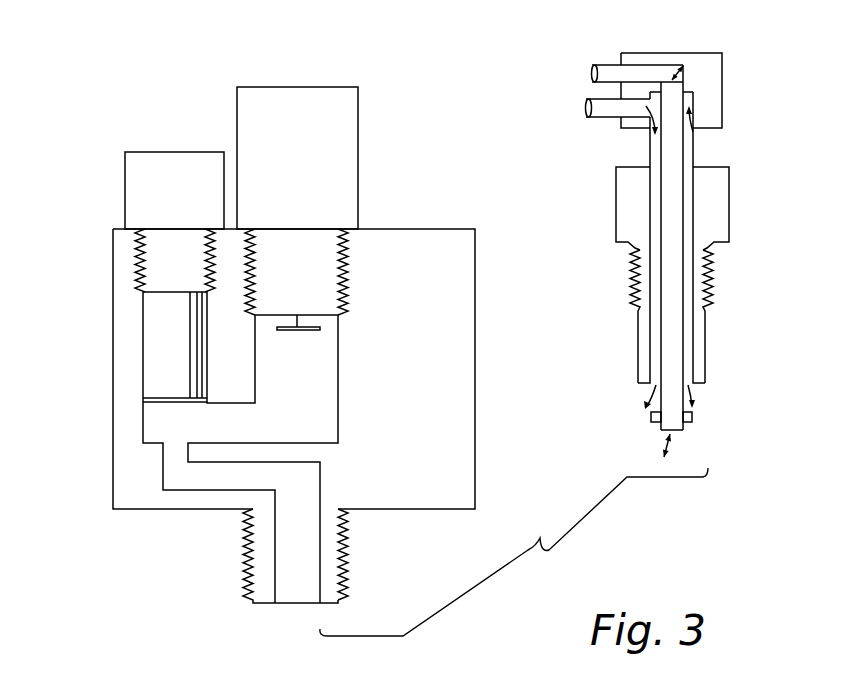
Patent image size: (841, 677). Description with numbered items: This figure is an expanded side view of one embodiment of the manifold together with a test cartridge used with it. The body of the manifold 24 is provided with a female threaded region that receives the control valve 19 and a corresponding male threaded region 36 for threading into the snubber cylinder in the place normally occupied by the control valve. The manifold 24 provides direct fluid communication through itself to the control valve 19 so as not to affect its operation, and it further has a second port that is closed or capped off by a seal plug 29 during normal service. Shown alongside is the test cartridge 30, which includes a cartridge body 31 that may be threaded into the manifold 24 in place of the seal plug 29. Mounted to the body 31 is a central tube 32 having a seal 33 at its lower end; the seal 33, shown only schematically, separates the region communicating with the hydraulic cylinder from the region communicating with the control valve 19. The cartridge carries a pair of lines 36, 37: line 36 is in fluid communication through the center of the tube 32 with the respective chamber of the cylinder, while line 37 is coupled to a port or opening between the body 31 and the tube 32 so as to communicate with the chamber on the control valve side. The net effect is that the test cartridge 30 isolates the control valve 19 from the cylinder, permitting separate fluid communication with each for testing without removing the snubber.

The control valve 19 is at (350, 160).
The manifold 24 is at (470, 365).
The seal plug 29 is at (125, 159).
The test cartridge 30 is at (682, 255).
The cartridge body 31 is at (616, 198).
The central tube 32 is at (680, 407).
The seal 33 is at (651, 418).
The male threaded region / line 36 is at (247, 556).
The line 37 is at (597, 113).